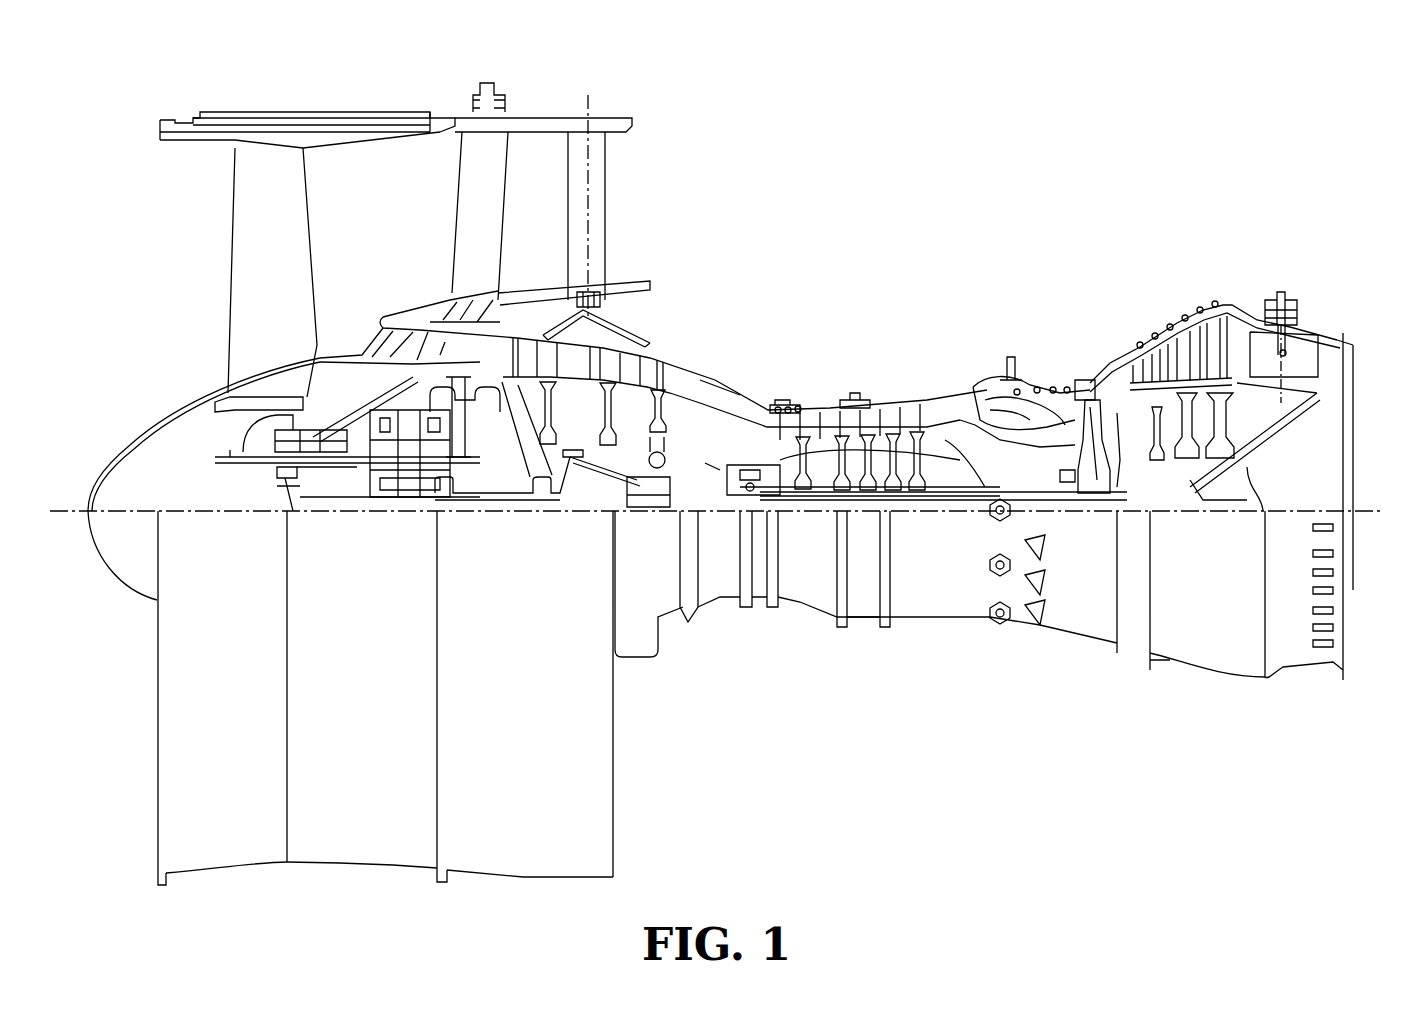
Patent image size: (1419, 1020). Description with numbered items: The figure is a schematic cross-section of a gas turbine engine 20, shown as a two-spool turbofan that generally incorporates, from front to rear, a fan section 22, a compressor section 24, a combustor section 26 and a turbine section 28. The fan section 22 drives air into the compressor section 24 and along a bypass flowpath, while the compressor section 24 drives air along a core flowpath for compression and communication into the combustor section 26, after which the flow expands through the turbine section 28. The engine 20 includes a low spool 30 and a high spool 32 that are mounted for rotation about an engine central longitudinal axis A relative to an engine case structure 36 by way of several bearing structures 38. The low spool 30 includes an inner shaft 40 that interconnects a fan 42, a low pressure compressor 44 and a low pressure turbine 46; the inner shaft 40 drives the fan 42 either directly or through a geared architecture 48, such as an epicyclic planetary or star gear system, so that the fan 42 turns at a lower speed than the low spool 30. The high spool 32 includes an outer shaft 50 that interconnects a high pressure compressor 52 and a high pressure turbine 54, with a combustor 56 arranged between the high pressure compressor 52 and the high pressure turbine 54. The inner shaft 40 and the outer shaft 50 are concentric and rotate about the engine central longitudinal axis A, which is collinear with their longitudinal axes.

The gas turbine engine 20 is at (1093, 195).
The fan section 22 is at (155, 91).
The compressor section 24 is at (455, 248).
The combustor section 26 is at (900, 248).
The turbine section 28 is at (1282, 248).
The low spool 30 is at (705, 463).
The high spool 32 is at (940, 487).
The engine case structure 36 is at (862, 623).
The bearing structures 38 is at (198, 585).
The inner shaft 40 is at (1055, 500).
The fan 42 is at (283, 292).
The low pressure compressor 44 is at (650, 357).
The low pressure turbine 46 is at (1197, 348).
The geared architecture 48 is at (400, 458).
The outer shaft 50 is at (1067, 482).
The high pressure compressor 52 is at (790, 417).
The high pressure turbine 54 is at (1093, 421).
The combustor 56 is at (1027, 418).
The engine central longitudinal axis A is at (1372, 510).